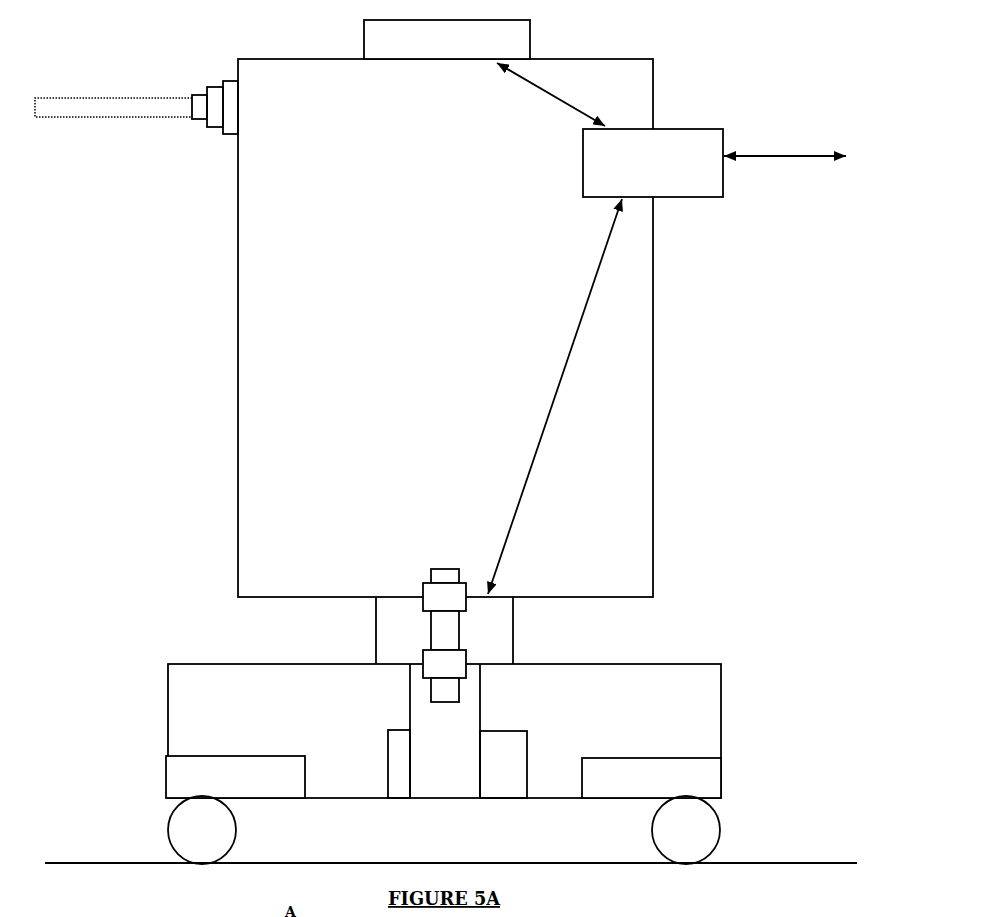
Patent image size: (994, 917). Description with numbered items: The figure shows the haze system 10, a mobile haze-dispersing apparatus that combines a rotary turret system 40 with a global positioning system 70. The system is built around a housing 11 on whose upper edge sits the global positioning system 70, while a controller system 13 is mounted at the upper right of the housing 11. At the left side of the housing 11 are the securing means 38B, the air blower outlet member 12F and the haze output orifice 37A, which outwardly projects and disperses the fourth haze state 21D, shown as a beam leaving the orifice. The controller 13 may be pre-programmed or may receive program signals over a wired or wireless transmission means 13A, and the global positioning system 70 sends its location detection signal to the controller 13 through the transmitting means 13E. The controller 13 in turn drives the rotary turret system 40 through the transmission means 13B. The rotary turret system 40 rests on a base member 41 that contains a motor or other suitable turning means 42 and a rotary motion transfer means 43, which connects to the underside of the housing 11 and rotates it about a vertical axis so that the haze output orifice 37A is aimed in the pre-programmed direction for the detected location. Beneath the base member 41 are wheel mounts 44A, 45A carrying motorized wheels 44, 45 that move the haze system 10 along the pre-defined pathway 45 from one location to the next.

The haze system 10 is at (445, 328).
The housing 11 is at (445, 328).
The global positioning system 70 is at (447, 39).
The controller system 13 is at (653, 163).
The transmitting means 13E is at (551, 94).
The wired or wireless transmission means 13A is at (785, 169).
The transmission means 13B is at (555, 396).
The fourth haze state 21D is at (113, 116).
The haze output orifice 37A is at (192, 114).
The air blower outlet member 12F is at (207, 86).
The securing means 38B is at (221, 76).
The rotary turret system 40 is at (347, 670).
The base member 41 is at (444, 731).
The motor or other suitable turning means 42 is at (457, 731).
The rotary motion transfer means 43 is at (459, 635).
The left wheel mount 44A is at (235, 777).
The right wheel mount 45A is at (651, 778).
The motorized wheel 44 is at (202, 830).
The motorized wheel 45 is at (451, 842).